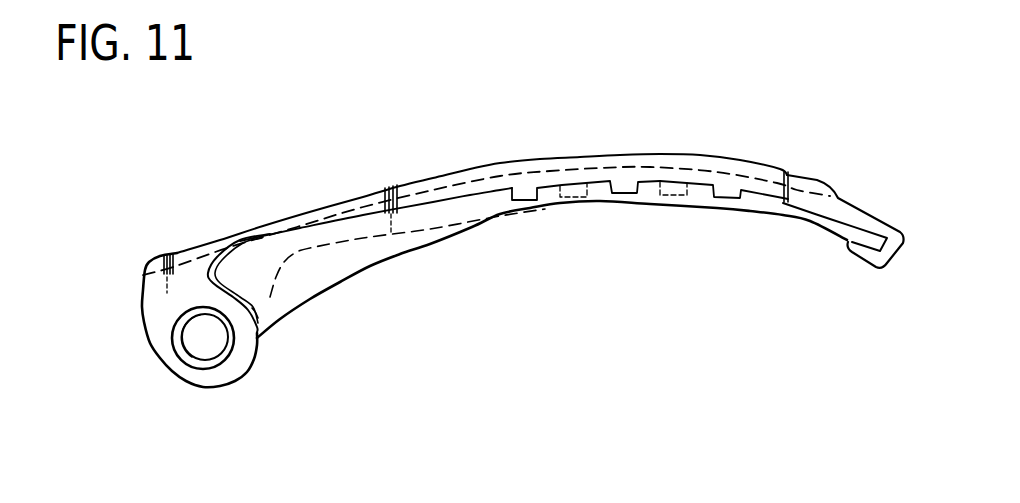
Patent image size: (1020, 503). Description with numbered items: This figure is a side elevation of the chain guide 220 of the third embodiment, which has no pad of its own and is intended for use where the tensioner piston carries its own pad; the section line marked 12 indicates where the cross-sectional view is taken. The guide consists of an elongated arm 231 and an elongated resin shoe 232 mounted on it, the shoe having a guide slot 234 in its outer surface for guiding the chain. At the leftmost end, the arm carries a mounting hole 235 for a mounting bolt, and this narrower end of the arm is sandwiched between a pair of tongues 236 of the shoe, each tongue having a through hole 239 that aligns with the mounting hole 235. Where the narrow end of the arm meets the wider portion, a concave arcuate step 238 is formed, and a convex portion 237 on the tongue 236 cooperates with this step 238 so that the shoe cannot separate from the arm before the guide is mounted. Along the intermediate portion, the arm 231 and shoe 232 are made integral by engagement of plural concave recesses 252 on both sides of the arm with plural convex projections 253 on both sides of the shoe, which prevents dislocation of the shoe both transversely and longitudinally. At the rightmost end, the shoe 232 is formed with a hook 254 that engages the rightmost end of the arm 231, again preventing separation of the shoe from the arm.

The chain guide 220 is at (504, 241).
The arm 231 is at (473, 229).
The shoe 232 is at (347, 196).
The guide slot 234 is at (433, 188).
The mounting hole 235 is at (200, 360).
The tongue 236 is at (142, 325).
The convex portion 237 is at (262, 339).
The step 238 is at (267, 307).
The through hole 239 is at (181, 358).
The concave recess 252 is at (614, 189).
The convex projection 253 is at (726, 194).
The hook 254 is at (864, 263).
The section line 12- 12 is at (625, 140).